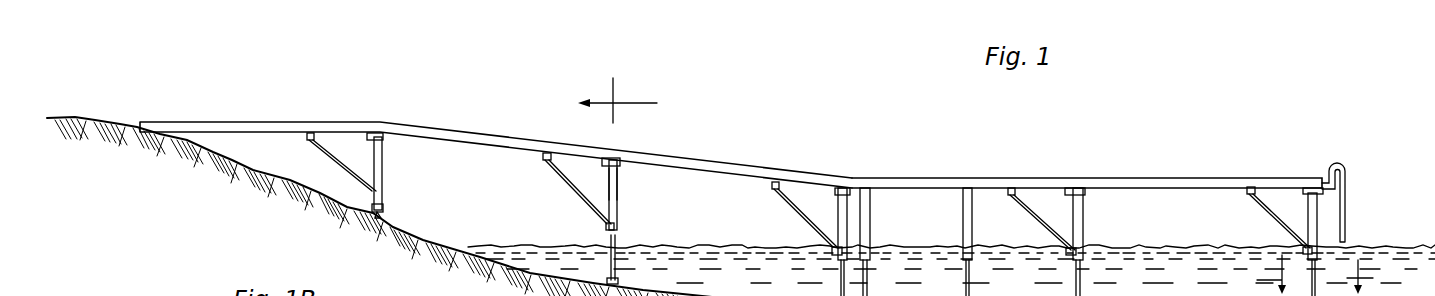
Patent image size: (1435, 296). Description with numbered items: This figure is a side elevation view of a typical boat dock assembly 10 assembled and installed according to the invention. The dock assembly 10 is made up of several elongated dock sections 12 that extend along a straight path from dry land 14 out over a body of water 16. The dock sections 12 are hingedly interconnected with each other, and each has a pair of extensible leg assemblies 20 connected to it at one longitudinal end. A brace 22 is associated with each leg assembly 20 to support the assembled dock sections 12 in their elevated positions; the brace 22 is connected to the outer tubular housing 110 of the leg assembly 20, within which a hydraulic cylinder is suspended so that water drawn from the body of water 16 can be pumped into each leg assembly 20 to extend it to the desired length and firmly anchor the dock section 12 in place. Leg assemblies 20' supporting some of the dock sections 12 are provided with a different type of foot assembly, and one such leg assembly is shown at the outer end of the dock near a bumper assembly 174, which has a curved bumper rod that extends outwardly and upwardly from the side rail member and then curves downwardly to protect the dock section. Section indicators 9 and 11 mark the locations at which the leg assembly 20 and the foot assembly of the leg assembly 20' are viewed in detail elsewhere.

The section line 9 is at (604, 100).
The boat dock assembly 10 is at (766, 148).
The section line 11 is at (1319, 275).
The dock section 12 is at (468, 124).
The dry land 14 is at (90, 122).
The body of water 16 is at (1122, 260).
The extensible leg assembly 20 is at (657, 221).
The leg assembly 20' is at (1351, 242).
The brace 22 is at (575, 192).
The outer tubular housing 110 is at (621, 183).
The bumper assembly 174 is at (1355, 133).